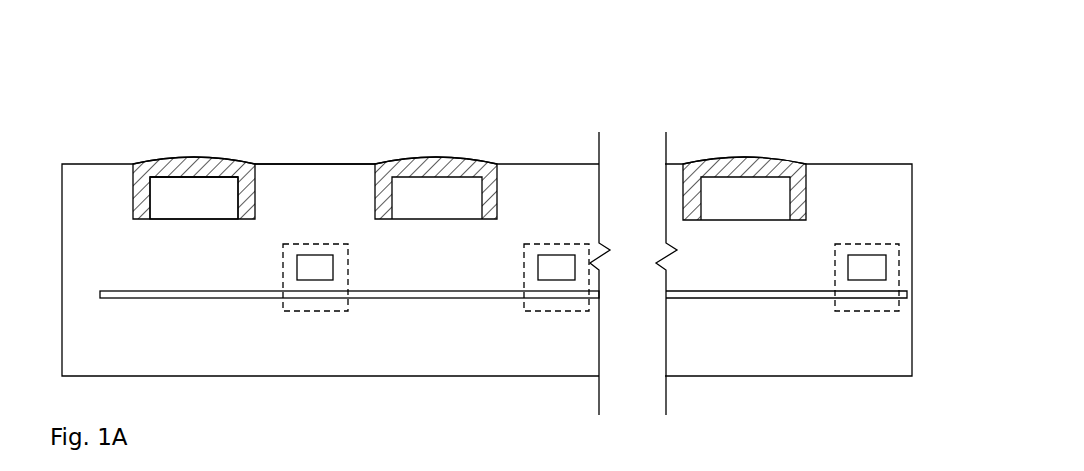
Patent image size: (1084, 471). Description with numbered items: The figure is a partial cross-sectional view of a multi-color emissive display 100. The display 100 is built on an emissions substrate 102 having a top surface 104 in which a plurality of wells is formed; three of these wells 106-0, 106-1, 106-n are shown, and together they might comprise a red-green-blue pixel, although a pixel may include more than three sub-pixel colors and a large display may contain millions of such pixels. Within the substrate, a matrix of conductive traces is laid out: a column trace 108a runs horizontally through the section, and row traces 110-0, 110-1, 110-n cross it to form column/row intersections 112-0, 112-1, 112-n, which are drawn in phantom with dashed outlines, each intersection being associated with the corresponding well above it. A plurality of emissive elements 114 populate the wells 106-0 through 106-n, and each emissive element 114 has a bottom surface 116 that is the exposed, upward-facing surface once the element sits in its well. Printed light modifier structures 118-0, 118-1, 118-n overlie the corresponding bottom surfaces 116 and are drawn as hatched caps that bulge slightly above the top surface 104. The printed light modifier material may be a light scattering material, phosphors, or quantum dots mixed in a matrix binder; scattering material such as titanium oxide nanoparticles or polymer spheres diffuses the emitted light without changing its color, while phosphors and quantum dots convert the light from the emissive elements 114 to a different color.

The display 100 is at (862, 56).
The emissions substrate 102 is at (803, 358).
The top surface 104 is at (339, 160).
The well 106-0 is at (191, 130).
The well 106-1 is at (433, 132).
The well 106-n is at (743, 132).
The column trace 108a is at (197, 298).
The row trace 110-0 is at (305, 267).
The row trace 110-1 is at (545, 267).
The row trace 110-n is at (862, 267).
The column/row intersection 112-0 is at (348, 310).
The column/row intersection 112-1 is at (556, 277).
The column/row intersection 112-n is at (867, 277).
The emissive element 114 is at (215, 208).
The bottom surface 116 is at (167, 173).
The printed light modifier structure 118-0 is at (262, 137).
The printed light modifier structure 118-1 is at (517, 137).
The printed light modifier structure 118-n is at (825, 137).